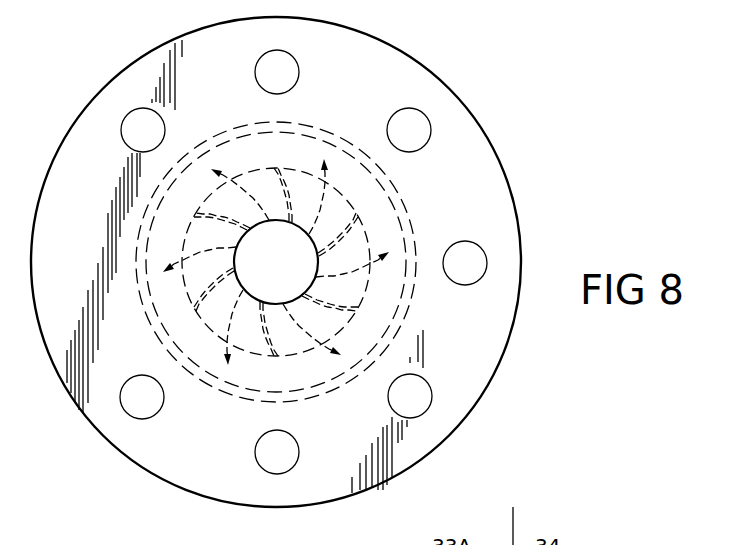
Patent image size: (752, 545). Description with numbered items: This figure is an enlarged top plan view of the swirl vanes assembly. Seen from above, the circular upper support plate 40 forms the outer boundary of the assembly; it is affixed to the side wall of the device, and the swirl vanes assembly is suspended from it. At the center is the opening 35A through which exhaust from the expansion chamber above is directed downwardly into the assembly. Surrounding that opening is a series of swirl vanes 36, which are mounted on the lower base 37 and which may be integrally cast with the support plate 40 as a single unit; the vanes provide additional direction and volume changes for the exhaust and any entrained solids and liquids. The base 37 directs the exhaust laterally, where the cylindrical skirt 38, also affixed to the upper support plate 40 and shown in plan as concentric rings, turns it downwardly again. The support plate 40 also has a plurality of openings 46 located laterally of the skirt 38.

The opening 35A is at (236, 262).
The swirl vanes 36 is at (356, 311).
The lower base 37 is at (280, 168).
The cylindrical skirt 38 is at (402, 194).
The upper support plate 40 is at (517, 221).
The openings 46 is at (466, 285).